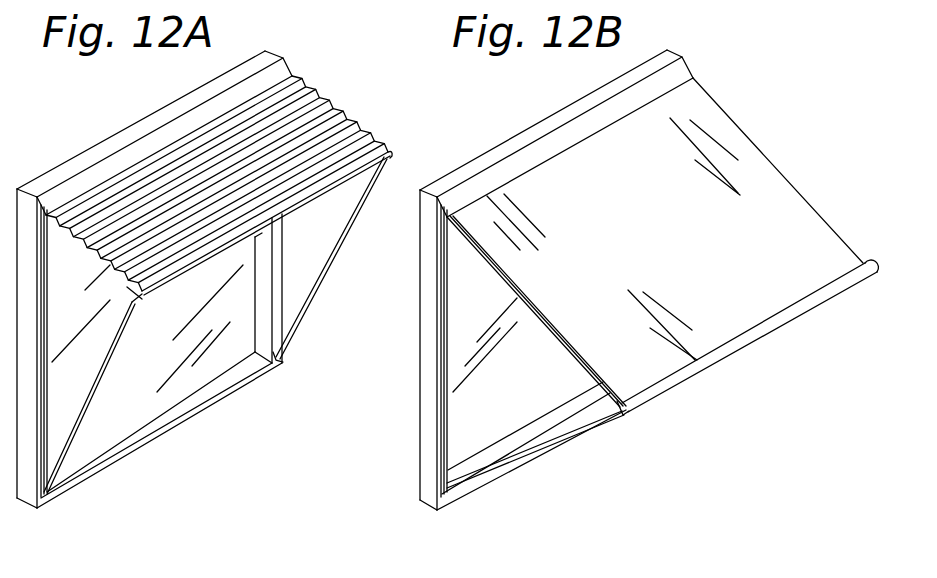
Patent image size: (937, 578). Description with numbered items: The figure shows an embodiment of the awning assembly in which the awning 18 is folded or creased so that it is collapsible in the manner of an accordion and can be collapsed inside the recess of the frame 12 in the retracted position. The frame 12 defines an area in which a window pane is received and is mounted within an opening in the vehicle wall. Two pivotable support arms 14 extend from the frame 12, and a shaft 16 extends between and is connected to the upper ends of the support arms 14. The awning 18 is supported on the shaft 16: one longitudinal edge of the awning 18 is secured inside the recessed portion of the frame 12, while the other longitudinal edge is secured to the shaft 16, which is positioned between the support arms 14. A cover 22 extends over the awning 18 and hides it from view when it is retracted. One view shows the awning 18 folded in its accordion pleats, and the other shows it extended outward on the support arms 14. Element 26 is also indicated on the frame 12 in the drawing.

In FIG. 12A, the frame 12 is at (262, 2).
In FIG. 12B, the frame 12 is at (510, 147).
In FIG. 12A, the support arms 14 is at (340, 247).
In FIG. 12B, the support arms 14 is at (567, 440).
In FIG. 12A, the shaft 16 is at (363, 167).
In FIG. 12B, the shaft 16 is at (767, 330).
In FIG. 12A, the awning 18 is at (327, 110).
In FIG. 12B, the awning 18 is at (758, 160).
In FIG. 12A, the cover 22 is at (268, 76).
In FIG. 12B, the cover 22 is at (683, 70).
In FIG. 12A, the side track 26 is at (42, 403).
In FIG. 12B, the side track 26 is at (437, 380).